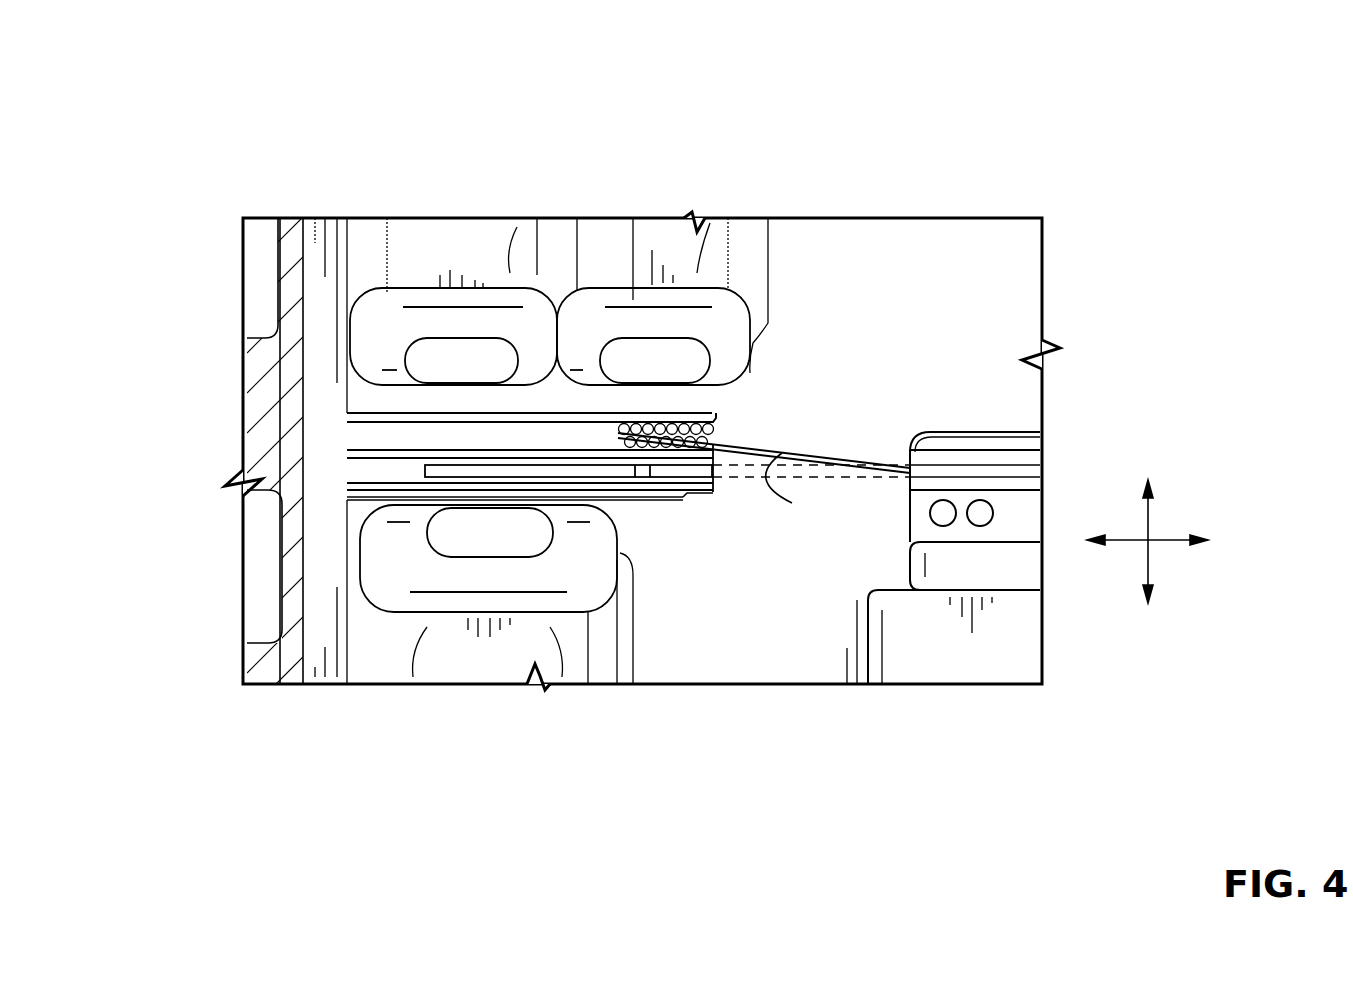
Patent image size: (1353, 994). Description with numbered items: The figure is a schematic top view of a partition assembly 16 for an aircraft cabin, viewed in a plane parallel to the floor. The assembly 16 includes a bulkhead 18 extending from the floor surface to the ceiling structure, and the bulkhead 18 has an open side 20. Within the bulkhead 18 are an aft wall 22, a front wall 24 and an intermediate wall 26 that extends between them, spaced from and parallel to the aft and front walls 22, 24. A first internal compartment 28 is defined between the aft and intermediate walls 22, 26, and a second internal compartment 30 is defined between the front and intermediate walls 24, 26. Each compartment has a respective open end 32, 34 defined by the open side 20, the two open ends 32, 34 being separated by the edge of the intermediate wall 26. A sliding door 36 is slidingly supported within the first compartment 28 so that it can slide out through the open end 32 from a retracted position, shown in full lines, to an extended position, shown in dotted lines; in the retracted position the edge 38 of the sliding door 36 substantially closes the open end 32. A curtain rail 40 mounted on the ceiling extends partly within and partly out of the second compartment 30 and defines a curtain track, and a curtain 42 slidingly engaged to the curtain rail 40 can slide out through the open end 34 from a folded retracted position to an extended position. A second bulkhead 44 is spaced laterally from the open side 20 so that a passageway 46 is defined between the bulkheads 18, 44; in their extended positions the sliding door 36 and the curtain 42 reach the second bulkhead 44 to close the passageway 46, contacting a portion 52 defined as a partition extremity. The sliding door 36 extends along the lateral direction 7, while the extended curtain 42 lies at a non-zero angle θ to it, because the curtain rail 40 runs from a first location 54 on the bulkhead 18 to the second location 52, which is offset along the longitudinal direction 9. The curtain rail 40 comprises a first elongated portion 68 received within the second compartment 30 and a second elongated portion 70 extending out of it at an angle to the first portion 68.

The lateral direction 7 is at (1170, 540).
The longitudinal direction 9 is at (1148, 555).
The partition assembly 16 is at (535, 390).
The bulkhead 18 is at (395, 392).
The open side 20 is at (770, 408).
The aft wall 22 is at (392, 488).
The front wall 24 is at (447, 423).
The intermediate wall 26 is at (350, 455).
The first internal compartment 28 is at (445, 480).
The second internal compartment 30 is at (380, 433).
The open end of first compartment 32 is at (713, 480).
The open end of second compartment 34 is at (718, 412).
The sliding door 36 is at (565, 470).
The edge of the sliding door 38 is at (710, 496).
The curtain rail 40 is at (822, 421).
The curtain 42 is at (678, 423).
The second bulkhead 44 is at (1030, 421).
The passageway 46 is at (696, 571).
The partition extremity 52 is at (910, 465).
The first location 54 is at (722, 428).
The first elongated portion 68 is at (659, 402).
The second elongated portion 70 is at (860, 455).